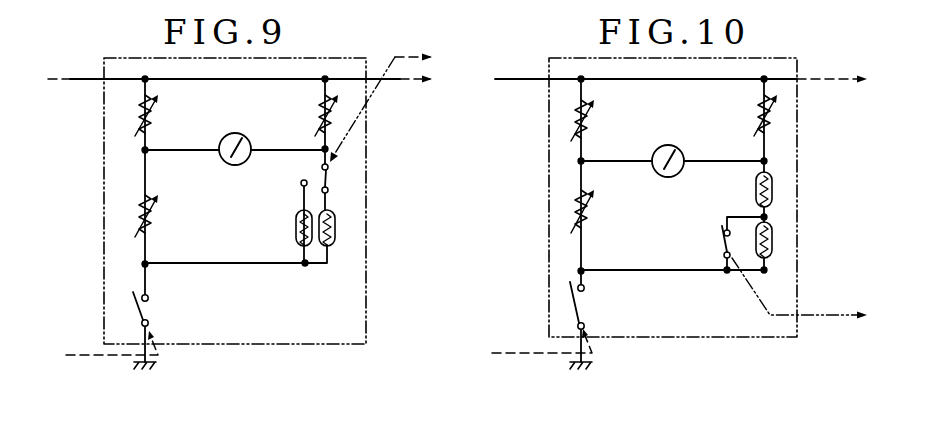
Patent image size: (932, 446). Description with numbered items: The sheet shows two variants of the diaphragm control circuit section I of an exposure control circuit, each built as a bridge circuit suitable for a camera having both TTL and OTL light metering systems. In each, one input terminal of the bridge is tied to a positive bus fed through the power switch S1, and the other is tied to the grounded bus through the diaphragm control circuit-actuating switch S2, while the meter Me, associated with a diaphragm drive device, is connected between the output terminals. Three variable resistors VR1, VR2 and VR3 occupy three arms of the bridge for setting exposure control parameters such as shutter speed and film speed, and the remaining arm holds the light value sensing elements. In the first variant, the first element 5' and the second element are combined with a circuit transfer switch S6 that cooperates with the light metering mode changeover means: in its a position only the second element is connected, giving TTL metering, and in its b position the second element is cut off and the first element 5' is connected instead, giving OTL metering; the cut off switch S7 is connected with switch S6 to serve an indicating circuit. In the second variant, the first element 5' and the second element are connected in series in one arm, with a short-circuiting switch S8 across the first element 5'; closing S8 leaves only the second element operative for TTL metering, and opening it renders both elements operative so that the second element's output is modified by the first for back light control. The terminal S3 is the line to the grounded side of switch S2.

In FIG. 9, the power switch S1 is at (37, 79).
In FIG. 10, the power switch S1 is at (497, 67).
In FIG. 9, the signal line S3 is at (88, 348).
In FIG. 10, the signal line S3 is at (518, 346).
In FIG. 9, the cut off switch S7 is at (400, 104).
In FIG. 10, the cut off switch S7 is at (823, 197).
In FIG. 9, the variable resistor VR1 is at (314, 115).
In FIG. 10, the variable resistor VR1 is at (753, 115).
In FIG. 9, the variable resistor VR2 is at (163, 115).
In FIG. 10, the variable resistor VR2 is at (599, 120).
In FIG. 9, the variable resistor VR3 is at (163, 216).
In FIG. 10, the variable resistor VR3 is at (599, 211).
In FIG. 9, the meter Me is at (235, 140).
In FIG. 10, the meter Me is at (668, 152).
In FIG. 9, the diaphragm control circuit-actuating switch S2 is at (153, 309).
In FIG. 10, the diaphragm control circuit-actuating switch S2 is at (590, 305).
In FIG. 9, the circuit transfer switch S6 is at (338, 178).
In FIG. 10, the short-circuiting switch S8 is at (715, 242).
In FIG. 9, the a position a is at (336, 195).
In FIG. 9, the b position b is at (298, 182).
In FIG. 9, the first element 5′ is at (296, 226).
In FIG. 10, the first element 5′ is at (796, 222).
In FIG. 9, the diaphragm control circuit section I is at (289, 324).
In FIG. 10, the diaphragm control circuit section I is at (700, 321).